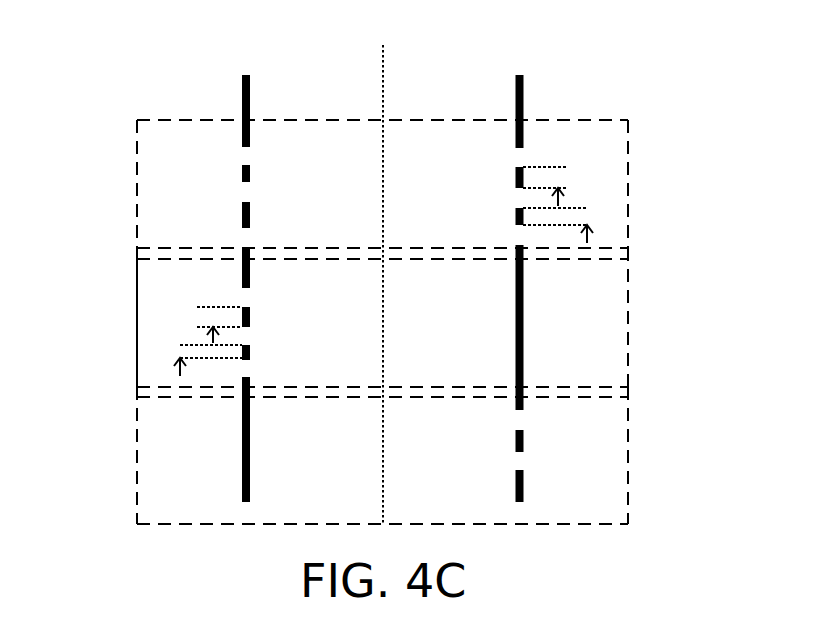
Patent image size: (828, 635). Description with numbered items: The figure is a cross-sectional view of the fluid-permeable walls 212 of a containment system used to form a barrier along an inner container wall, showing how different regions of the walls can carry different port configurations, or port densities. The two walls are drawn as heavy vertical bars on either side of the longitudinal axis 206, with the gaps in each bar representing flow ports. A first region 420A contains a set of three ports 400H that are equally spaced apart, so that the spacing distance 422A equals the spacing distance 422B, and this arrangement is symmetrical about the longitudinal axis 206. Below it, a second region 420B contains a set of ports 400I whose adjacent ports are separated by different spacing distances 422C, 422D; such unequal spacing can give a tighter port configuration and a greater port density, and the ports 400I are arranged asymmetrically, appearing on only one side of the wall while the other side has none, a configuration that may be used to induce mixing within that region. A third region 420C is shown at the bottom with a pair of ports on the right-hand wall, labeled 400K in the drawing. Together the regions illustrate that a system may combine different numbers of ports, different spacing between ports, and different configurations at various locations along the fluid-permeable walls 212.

The fluid-permeable walls 212 is at (243, 74).
The longitudinal axis 206 is at (383, 50).
The ports 400H is at (197, 175).
The ports 400I is at (147, 300).
The third region 400K is at (573, 452).
The first region 420A is at (382, 184).
The second region 420B is at (382, 317).
The third region 420C is at (382, 455).
The spacing distance 422A is at (558, 167).
The spacing distance 422B is at (581, 200).
The spacing distance 422C is at (207, 299).
The spacing distance 422D is at (186, 337).